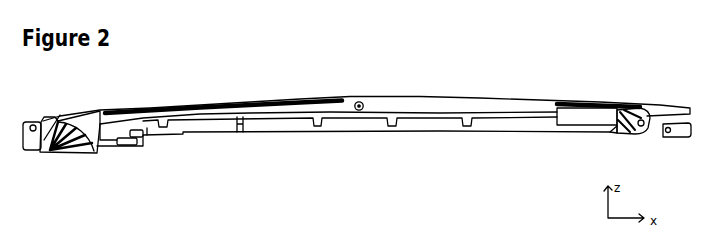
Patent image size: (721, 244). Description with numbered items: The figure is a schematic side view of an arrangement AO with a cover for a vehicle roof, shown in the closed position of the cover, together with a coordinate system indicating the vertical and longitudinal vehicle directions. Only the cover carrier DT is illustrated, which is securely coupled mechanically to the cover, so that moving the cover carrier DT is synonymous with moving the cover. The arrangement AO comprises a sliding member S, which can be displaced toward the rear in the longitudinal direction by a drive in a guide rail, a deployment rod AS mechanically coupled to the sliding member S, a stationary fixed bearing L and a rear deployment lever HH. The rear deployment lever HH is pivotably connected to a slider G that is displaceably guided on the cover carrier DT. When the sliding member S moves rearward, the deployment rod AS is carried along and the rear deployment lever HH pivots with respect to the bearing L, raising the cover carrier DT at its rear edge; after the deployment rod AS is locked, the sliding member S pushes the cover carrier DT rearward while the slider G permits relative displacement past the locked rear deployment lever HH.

The arrangement AO is at (638, 45).
The cover carrier DT is at (432, 102).
The deployment rod AS is at (442, 131).
The sliding member S is at (115, 148).
The slider G is at (617, 133).
The rear deployment lever HH is at (645, 135).
The stationary fixed bearing L is at (672, 137).